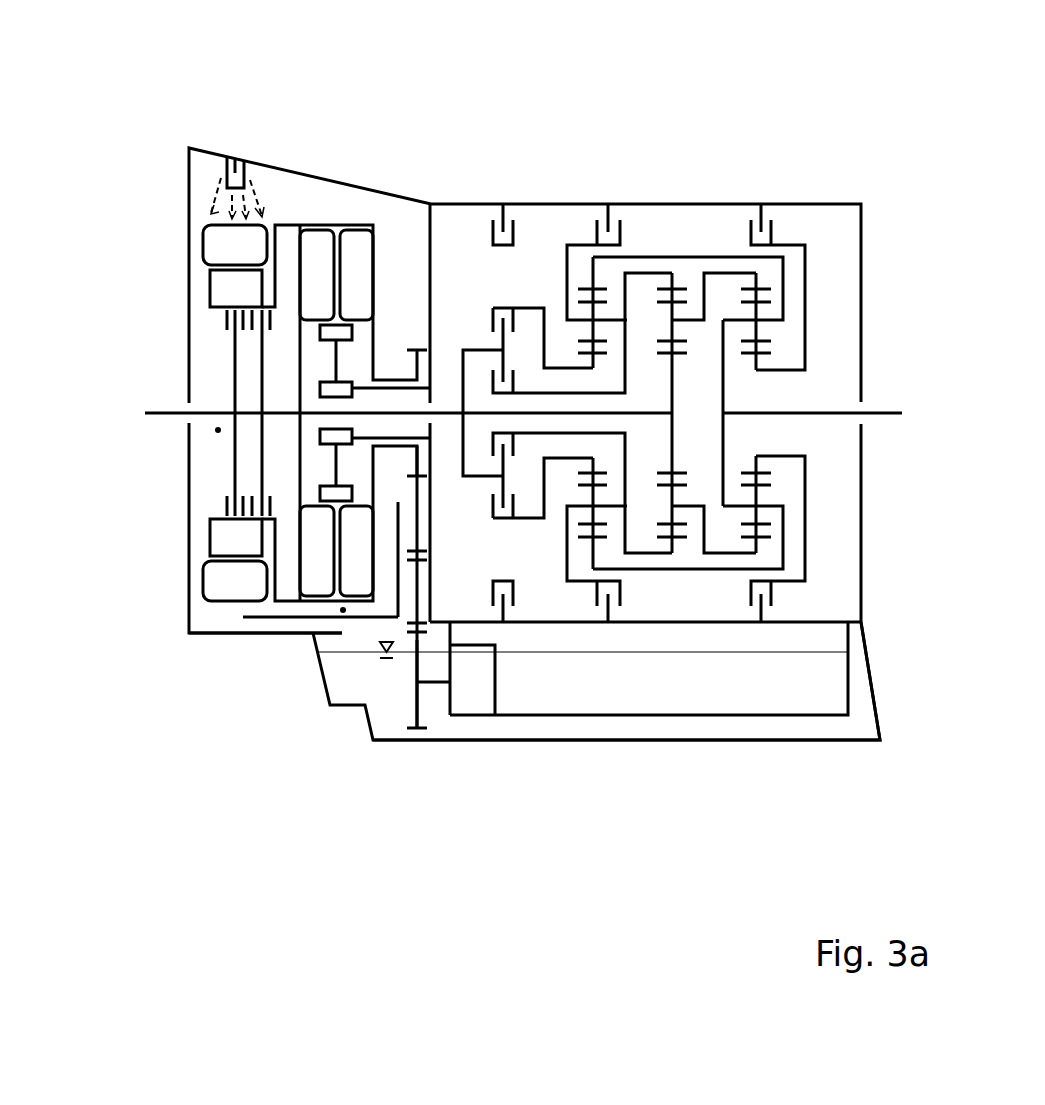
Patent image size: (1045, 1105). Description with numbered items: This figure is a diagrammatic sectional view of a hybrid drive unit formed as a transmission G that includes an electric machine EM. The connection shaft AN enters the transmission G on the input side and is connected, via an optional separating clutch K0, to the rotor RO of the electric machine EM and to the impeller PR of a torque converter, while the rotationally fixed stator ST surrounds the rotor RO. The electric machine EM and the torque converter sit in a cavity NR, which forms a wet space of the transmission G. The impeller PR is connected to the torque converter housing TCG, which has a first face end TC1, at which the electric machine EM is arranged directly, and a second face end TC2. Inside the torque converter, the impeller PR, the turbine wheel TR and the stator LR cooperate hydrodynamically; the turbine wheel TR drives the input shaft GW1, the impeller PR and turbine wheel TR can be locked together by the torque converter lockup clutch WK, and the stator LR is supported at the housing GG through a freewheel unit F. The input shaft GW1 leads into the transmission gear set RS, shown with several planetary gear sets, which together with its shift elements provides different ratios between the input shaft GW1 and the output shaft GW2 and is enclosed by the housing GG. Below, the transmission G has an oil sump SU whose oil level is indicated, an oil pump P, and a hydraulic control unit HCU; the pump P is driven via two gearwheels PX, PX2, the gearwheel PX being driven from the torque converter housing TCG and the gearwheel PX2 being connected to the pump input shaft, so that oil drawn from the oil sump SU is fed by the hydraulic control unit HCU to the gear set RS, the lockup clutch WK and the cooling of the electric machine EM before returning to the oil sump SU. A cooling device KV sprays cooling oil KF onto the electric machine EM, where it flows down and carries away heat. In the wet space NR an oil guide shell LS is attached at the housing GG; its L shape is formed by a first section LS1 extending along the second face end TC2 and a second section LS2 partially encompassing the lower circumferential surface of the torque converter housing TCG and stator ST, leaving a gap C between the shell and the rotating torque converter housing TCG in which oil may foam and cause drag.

The transmission G is at (166, 146).
The cooling device KV is at (235, 168).
The cooling oil KF is at (213, 190).
The electric machine EM is at (152, 401).
The stator ST is at (222, 245).
The rotor RO is at (224, 288).
The separating clutch K0 is at (217, 314).
The torque converter lockup clutch WK is at (253, 337).
The input shaft GW1 is at (308, 412).
The connection shaft AN is at (167, 414).
The cavity NR is at (216, 431).
The gearwheel PX is at (413, 497).
The first face end TC1 is at (297, 569).
The second face end TC2 is at (379, 564).
The torque converter housing TCG is at (287, 455).
The turbine wheel TR is at (308, 247).
The impeller PR is at (355, 247).
The stator LR is at (346, 333).
The freewheel unit F is at (351, 388).
The housing GG is at (634, 318).
The transmission gear set RS is at (668, 172).
The output shaft GW2 is at (893, 412).
The oil guide shell LS is at (222, 619).
The first section LS1 is at (397, 604).
The second section LS2 is at (277, 618).
The gap C is at (342, 611).
The oil pump P is at (463, 697).
The gearwheel PX2 is at (415, 668).
The oil sump SU is at (649, 730).
The hydraulic control unit HCU is at (760, 675).